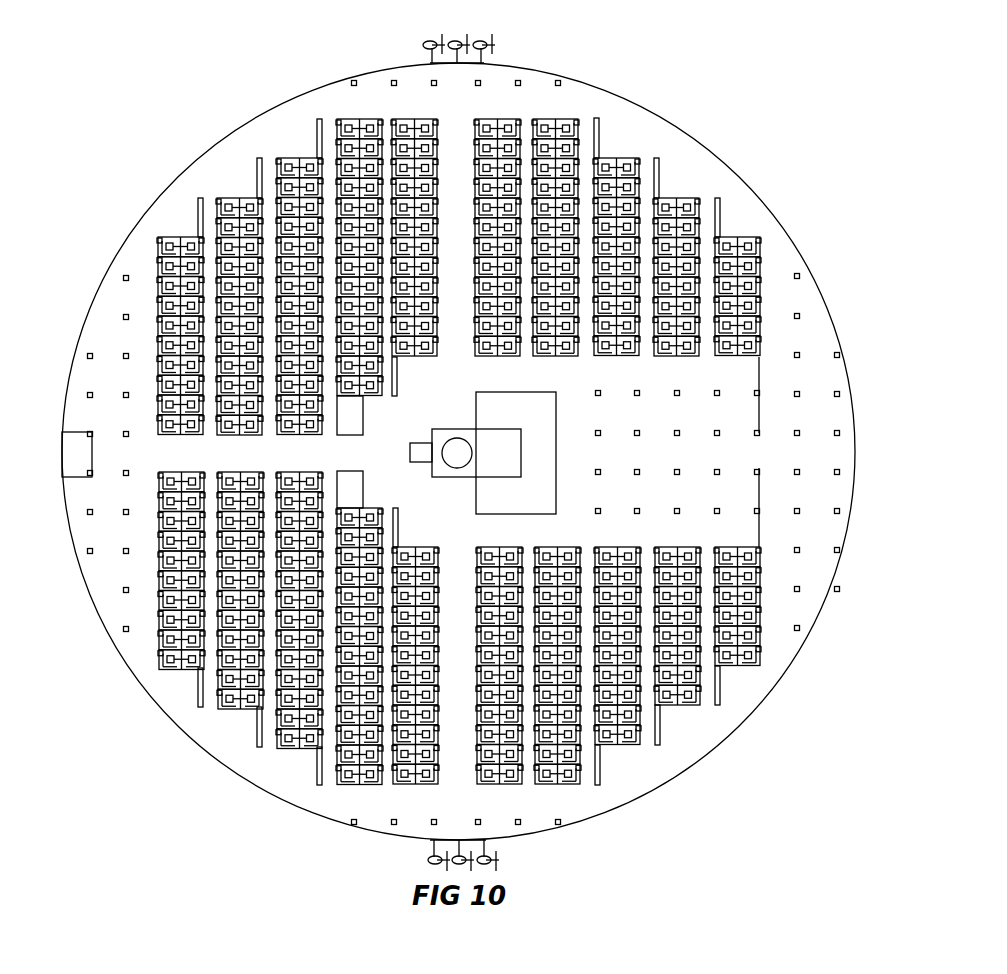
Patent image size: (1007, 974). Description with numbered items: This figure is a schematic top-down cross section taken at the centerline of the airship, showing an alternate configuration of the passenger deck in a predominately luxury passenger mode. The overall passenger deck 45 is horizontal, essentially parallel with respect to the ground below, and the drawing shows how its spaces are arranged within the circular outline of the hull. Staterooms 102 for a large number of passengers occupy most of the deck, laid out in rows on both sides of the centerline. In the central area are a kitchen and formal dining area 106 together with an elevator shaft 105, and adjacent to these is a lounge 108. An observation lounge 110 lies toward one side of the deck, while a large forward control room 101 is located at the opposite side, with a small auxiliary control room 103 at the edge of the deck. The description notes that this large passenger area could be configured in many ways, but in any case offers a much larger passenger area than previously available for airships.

The passenger deck 45 is at (688, 167).
The forward control room 101 is at (817, 360).
The staterooms 102 is at (630, 167).
The auxiliary control room 103 is at (82, 454).
The elevator shaft 105 is at (412, 455).
The kitchen and formal dining area 106 is at (476, 400).
The lounge 108 is at (700, 433).
The observation lounge 110 is at (108, 350).